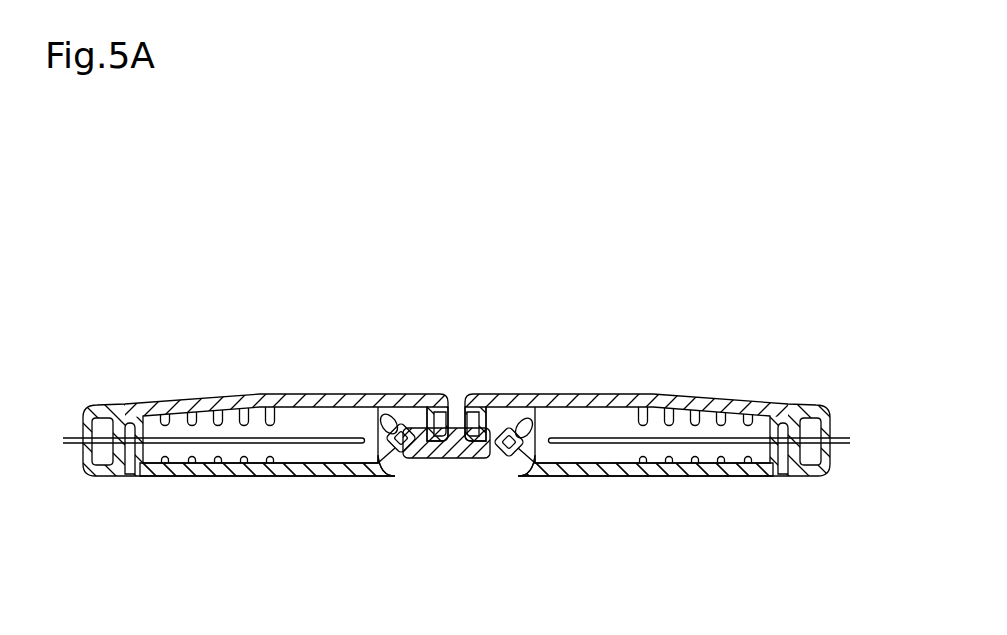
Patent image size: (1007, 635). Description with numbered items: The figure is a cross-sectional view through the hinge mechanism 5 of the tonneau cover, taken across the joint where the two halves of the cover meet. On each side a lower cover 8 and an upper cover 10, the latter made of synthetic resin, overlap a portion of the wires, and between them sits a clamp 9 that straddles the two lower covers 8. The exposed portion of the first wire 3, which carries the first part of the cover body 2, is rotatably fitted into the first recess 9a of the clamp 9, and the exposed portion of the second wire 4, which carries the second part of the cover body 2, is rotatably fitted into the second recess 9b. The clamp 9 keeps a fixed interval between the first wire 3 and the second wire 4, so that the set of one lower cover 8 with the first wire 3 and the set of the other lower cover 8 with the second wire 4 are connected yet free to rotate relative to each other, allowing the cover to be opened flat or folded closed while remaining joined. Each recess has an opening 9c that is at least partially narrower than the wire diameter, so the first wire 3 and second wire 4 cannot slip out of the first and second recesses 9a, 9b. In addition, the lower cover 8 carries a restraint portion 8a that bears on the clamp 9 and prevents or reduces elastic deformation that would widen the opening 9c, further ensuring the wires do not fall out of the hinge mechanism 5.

The cover body 2 is at (456, 440).
The first wire 3 is at (418, 462).
The second wire 4 is at (497, 460).
The hinge mechanism 5 is at (447, 311).
The lower cover 8 is at (238, 470).
The restraint portion 8a is at (367, 398).
The clamp 9 is at (453, 459).
The first recess 9a is at (403, 456).
The second recess 9b is at (515, 458).
The opening 9c is at (411, 418).
The upper cover 10 is at (242, 398).